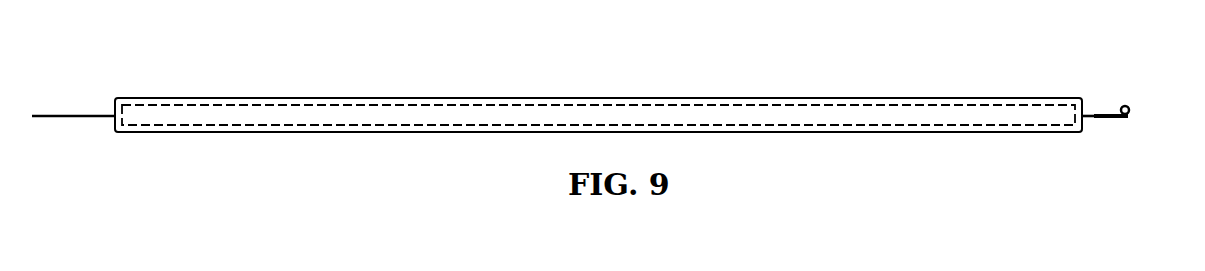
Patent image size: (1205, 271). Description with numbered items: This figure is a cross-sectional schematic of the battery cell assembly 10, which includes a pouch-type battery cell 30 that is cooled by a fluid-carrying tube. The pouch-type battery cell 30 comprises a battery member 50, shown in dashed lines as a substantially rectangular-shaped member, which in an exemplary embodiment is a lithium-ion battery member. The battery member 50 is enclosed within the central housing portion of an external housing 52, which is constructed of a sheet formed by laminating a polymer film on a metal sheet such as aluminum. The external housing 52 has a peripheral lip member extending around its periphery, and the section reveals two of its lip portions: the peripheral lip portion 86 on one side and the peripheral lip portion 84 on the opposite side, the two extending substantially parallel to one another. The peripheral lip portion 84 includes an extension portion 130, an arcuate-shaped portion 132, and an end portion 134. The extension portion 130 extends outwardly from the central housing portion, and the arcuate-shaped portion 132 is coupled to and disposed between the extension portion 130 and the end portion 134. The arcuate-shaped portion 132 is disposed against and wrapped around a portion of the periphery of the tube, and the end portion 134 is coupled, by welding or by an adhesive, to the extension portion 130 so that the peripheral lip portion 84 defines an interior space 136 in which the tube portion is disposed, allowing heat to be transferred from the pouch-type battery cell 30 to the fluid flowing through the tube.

The battery cell assembly 10 is at (376, 56).
The pouch-type battery cell 30 is at (251, 88).
The battery member 50 is at (472, 105).
The external housing 52 is at (528, 98).
The peripheral lip portion 84 is at (1094, 119).
The peripheral lip portion 86 is at (70, 115).
The extension portion 130 is at (1110, 119).
The arcuate-shaped portion 132 is at (1128, 106).
The end portion 134 is at (1114, 113).
The interior space 136 is at (1130, 111).